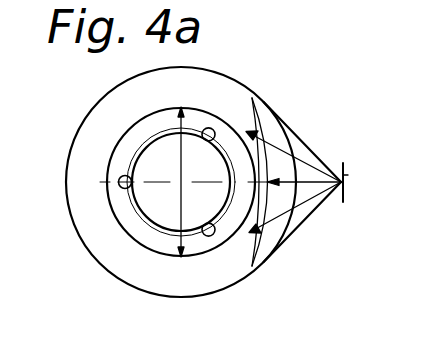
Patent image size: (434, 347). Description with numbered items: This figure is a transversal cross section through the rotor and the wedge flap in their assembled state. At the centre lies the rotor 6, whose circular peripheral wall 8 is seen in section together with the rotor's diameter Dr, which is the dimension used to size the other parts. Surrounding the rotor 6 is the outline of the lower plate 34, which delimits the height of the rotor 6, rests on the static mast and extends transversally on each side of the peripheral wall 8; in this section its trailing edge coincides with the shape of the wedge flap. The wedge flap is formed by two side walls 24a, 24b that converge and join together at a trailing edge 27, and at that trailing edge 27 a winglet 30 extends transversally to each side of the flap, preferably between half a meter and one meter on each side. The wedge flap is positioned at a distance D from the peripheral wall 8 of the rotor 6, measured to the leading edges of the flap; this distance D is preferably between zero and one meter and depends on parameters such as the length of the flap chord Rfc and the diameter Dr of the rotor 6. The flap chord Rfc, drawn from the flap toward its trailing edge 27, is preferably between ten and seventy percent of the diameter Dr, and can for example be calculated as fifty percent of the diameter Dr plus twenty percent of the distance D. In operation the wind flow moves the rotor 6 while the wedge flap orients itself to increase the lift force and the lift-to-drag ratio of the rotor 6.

The lower plate 34 is at (92, 108).
The peripheral wall 8 is at (110, 201).
The rotor 6 is at (134, 229).
The diameter of the rotor Dr is at (180, 186).
The flap chord Rfc is at (338, 190).
The side wall 24a is at (296, 130).
The side wall 24b is at (279, 235).
The distance D is at (253, 98).
The trailing edge 27 is at (343, 162).
The winglet 30 is at (348, 175).